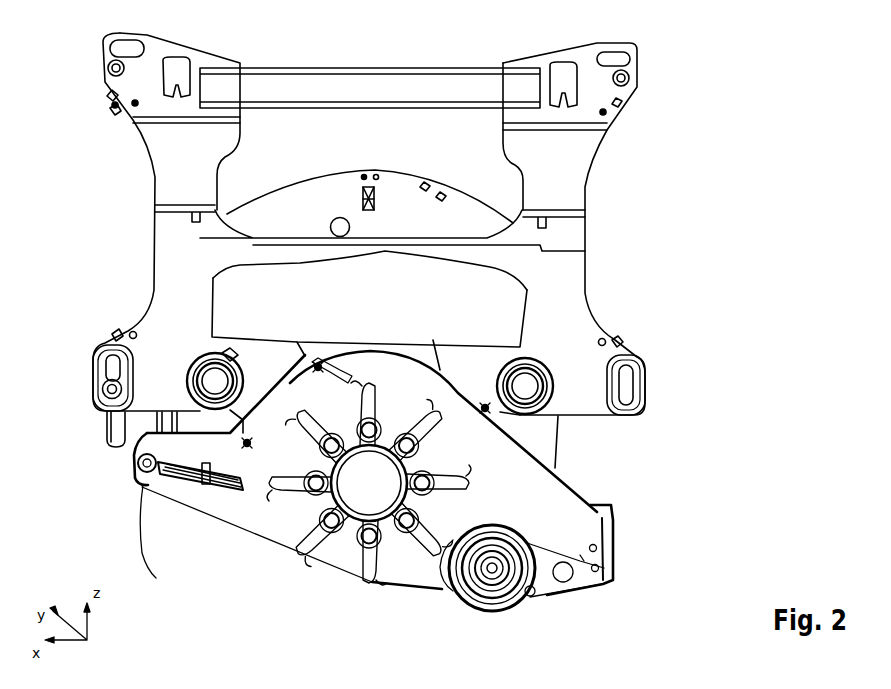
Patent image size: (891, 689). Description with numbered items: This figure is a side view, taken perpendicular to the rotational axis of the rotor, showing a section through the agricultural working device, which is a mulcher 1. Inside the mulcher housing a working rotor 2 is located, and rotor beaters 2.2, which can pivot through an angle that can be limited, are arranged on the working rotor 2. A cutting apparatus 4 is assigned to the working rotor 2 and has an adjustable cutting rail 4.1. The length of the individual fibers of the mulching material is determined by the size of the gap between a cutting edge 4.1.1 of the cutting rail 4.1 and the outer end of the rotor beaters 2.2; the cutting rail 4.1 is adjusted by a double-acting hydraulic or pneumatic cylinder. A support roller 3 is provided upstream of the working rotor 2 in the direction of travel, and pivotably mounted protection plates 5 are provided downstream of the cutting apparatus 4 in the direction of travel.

The mulcher 1 is at (690, 384).
The working rotor 2 is at (453, 520).
The rotor beaters 2.2 is at (377, 590).
The support roller 3 is at (506, 610).
The cutting apparatus 4 is at (243, 482).
The cutting rail 4.1 is at (245, 448).
The cutting edge 4.1.1 is at (245, 482).
The protection plates 5 is at (132, 538).